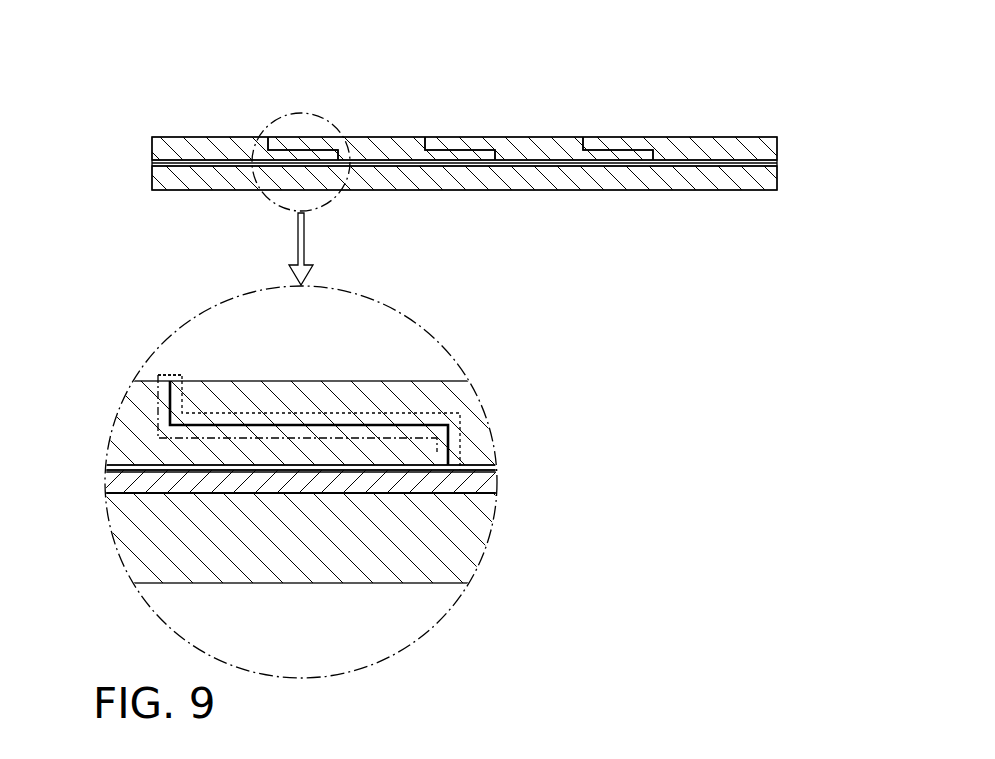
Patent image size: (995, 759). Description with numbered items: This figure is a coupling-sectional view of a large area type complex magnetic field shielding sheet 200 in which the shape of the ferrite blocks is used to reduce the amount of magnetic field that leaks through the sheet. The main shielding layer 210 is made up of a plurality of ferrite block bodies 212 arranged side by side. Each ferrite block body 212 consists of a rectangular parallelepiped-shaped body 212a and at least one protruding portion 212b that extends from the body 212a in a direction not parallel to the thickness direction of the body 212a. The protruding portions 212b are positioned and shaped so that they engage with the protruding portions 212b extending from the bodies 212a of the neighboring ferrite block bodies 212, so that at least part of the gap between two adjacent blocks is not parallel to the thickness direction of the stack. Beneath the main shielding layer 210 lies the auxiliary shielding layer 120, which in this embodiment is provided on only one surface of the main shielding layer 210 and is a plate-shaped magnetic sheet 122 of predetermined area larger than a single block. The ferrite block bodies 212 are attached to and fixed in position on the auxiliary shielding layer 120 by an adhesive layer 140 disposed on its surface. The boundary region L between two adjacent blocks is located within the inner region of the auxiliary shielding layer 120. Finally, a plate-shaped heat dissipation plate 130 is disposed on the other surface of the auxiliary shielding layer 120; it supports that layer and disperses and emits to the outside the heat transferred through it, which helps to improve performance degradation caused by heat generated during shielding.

The large area type complex magnetic field shielding sheet 200 is at (132, 45).
The main shielding layer 210 is at (778, 143).
The ferrite block body 212 is at (595, 63).
The body 212a is at (528, 150).
The protruding portion 212b is at (452, 142).
The adhesive layer 140 is at (500, 466).
The auxiliary shielding layer 120 is at (149, 161).
The plate-shaped magnetic sheet 122 is at (120, 482).
The heat dissipation plate 130 is at (780, 184).
The boundary region L is at (157, 372).